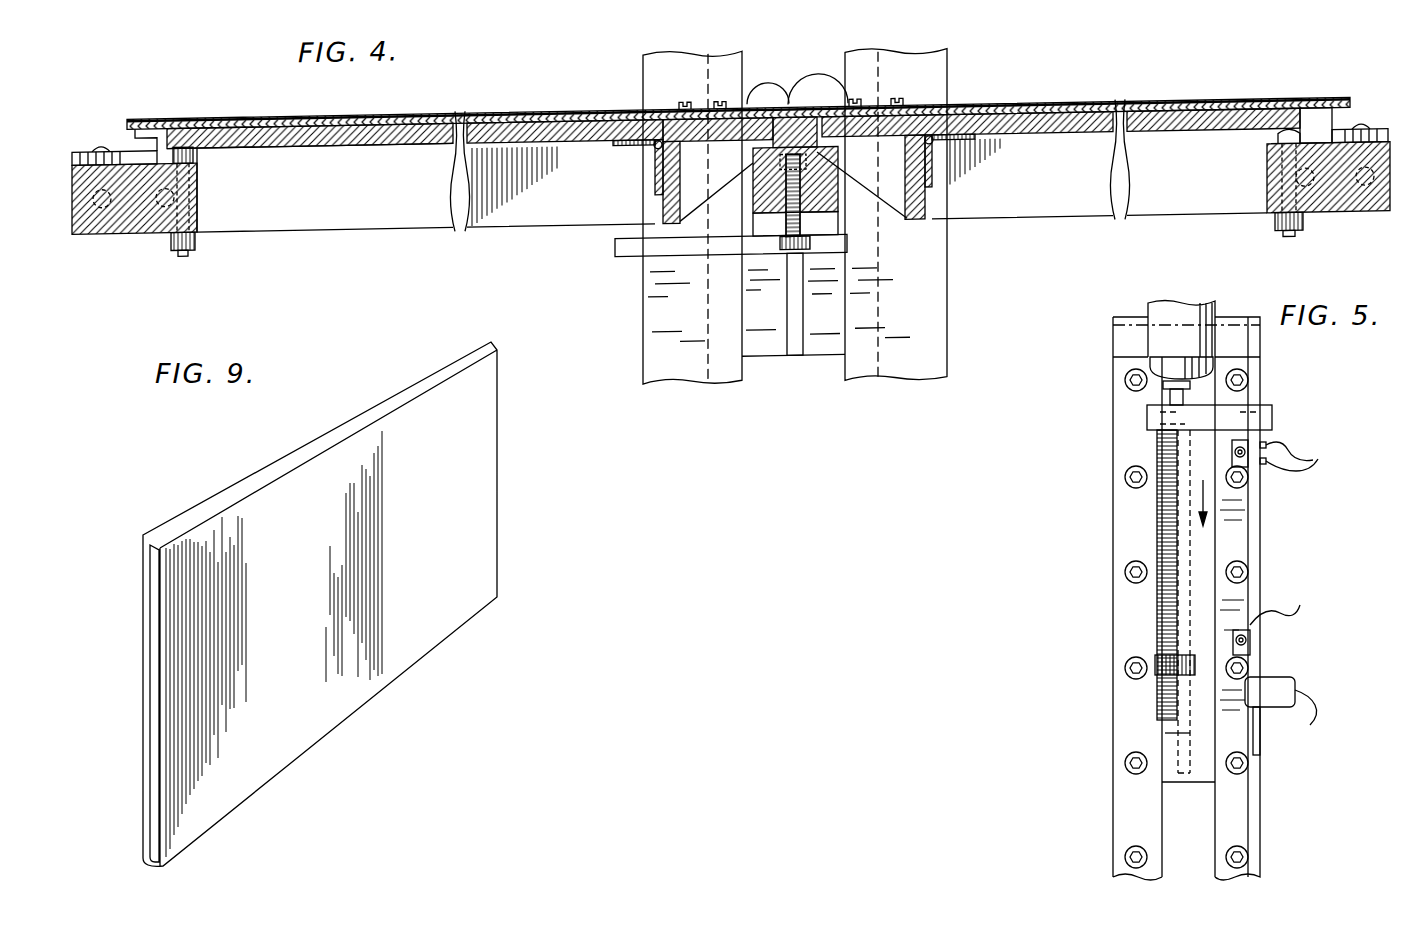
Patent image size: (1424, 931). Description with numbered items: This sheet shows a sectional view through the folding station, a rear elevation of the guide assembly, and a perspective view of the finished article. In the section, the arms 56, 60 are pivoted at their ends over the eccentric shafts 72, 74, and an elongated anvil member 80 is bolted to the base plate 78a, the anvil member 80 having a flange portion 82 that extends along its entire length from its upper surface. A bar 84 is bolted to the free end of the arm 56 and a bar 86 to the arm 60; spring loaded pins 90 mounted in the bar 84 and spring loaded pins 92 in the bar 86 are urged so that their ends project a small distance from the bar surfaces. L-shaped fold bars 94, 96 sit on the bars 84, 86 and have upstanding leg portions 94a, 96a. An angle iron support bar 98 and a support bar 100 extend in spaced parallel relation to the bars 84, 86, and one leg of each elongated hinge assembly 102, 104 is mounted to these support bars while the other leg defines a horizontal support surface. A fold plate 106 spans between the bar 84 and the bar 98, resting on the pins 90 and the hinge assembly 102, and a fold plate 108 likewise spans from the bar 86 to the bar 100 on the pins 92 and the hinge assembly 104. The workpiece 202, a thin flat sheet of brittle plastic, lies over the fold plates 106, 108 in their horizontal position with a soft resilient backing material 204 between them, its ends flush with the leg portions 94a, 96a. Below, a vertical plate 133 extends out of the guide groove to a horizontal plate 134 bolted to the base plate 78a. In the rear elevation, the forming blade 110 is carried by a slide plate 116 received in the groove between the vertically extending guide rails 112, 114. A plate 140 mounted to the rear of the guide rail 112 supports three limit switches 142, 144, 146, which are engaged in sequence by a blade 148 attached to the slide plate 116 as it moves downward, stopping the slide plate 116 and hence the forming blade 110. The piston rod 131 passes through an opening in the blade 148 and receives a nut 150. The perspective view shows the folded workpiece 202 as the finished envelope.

In FIG. 4, the arm 56 is at (400, 234).
In FIG. 4, the arm 60 is at (1042, 233).
In FIG. 4, the eccentric shaft 72 is at (770, 98).
In FIG. 4, the eccentric shaft 74 is at (810, 100).
In FIG. 4, the base plate 78a is at (830, 240).
In FIG. 4, the anvil member 80 is at (830, 212).
In FIG. 4, the flange portion 82 is at (796, 128).
In FIG. 4, the bar 84 is at (147, 219).
In FIG. 4, the bar 86 is at (1355, 233).
In FIG. 4, the spring loaded pin 90 is at (196, 156).
In FIG. 4, the spring loaded pin 92 is at (1280, 160).
In FIG. 4, the fold bar 94 is at (86, 150).
In FIG. 4, the upstanding leg portion 94a is at (150, 140).
In FIG. 4, the fold bar 96 is at (1400, 118).
In FIG. 4, the upstanding leg portion 96a is at (1332, 128).
In FIG. 4, the angle iron support bar 98 is at (686, 140).
In FIG. 4, the support bar 100 is at (905, 176).
In FIG. 4, the hinge assembly 102 is at (655, 178).
In FIG. 4, the hinge assembly 104 is at (932, 180).
In FIG. 4, the fold plate 106 is at (405, 146).
In FIG. 4, the fold plate 108 is at (1050, 140).
In FIG. 5, the forming blade 110 is at (1165, 733).
In FIG. 4, the guide rail 112 is at (660, 86).
In FIG. 5, the guide rail 112 is at (1262, 822).
In FIG. 4, the guide rail 114 is at (935, 92).
In FIG. 5, the guide rail 114 is at (1112, 797).
In FIG. 5, the slide plate 116 is at (1203, 768).
In FIG. 5, the piston rod 131 is at (1178, 627).
In FIG. 4, the vertical plate 133 is at (840, 353).
In FIG. 4, the horizontal plate 134 is at (642, 270).
In FIG. 5, the vertically extending plate 140 is at (1258, 547).
In FIG. 5, the limit switch 142 is at (1270, 462).
In FIG. 5, the limit switch 144 is at (1250, 650).
In FIG. 5, the limit switch 146 is at (1292, 682).
In FIG. 5, the blade 148 is at (1275, 418).
In FIG. 5, the nut 150 is at (1172, 663).
In FIG. 4, the workpiece 202 is at (262, 120).
In FIG. 9, the workpiece 202 is at (430, 552).
In FIG. 4, the backing material 204 is at (272, 146).